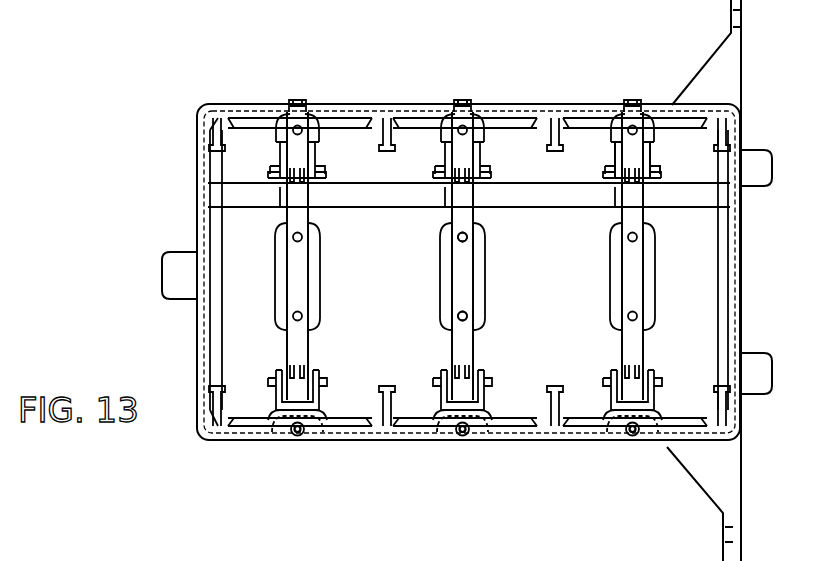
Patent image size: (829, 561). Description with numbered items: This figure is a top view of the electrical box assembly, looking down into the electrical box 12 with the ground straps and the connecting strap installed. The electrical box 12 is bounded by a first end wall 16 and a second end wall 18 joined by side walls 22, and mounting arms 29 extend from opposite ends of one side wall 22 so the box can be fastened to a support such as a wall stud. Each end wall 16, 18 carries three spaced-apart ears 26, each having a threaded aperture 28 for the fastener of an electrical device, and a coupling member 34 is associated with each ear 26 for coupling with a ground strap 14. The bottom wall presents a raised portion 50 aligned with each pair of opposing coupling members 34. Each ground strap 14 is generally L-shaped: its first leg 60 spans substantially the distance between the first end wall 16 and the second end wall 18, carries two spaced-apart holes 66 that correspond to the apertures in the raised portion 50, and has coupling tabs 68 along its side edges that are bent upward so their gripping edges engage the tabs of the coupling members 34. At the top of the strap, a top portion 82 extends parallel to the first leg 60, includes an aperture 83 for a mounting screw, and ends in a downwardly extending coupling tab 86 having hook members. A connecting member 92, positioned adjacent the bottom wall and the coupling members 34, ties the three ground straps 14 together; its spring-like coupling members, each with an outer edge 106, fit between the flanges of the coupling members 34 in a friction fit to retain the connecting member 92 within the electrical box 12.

The electrical box 12 is at (768, 97).
The ground strap 14 is at (420, 187).
The first end wall 16 is at (523, 104).
The second end wall 18 is at (528, 444).
The side walls 22 is at (195, 206).
The ears 26 is at (305, 440).
The threaded aperture 28 is at (296, 438).
The mounting arms 29 is at (742, 65).
The coupling member 34 is at (278, 172).
The raised portion 50 is at (276, 262).
The first leg 60 is at (290, 340).
The holes 66 is at (460, 239).
The coupling tabs 68 is at (457, 177).
The top portion 82 is at (297, 100).
The aperture 83 is at (452, 110).
The coupling tab 86 is at (461, 102).
The connecting member 92 is at (552, 207).
The outer edge 106 is at (612, 150).